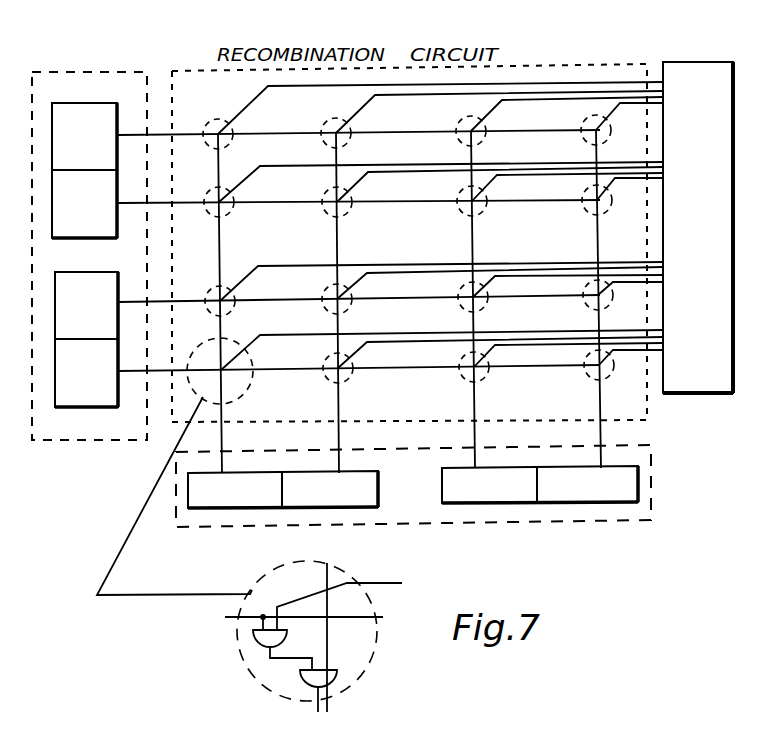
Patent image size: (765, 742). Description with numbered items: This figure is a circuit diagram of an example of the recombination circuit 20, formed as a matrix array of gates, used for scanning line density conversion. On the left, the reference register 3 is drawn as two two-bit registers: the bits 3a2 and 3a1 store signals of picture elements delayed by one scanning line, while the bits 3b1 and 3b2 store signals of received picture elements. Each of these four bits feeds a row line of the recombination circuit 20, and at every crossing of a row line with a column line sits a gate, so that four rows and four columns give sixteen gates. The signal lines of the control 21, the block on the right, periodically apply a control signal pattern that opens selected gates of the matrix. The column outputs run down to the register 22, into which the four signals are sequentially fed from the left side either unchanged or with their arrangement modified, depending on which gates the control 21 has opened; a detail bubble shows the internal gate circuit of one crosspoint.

The reference register 3 is at (96, 242).
The bit of register 3a 3a1 is at (84, 204).
The bit of register 3a 3a2 is at (84, 136).
The bit of register 3b 3b1 is at (86, 305).
The bit of register 3b 3b2 is at (86, 373).
The recombination circuit 20 is at (602, 51).
The control 21 is at (716, 62).
The register 22 is at (594, 521).